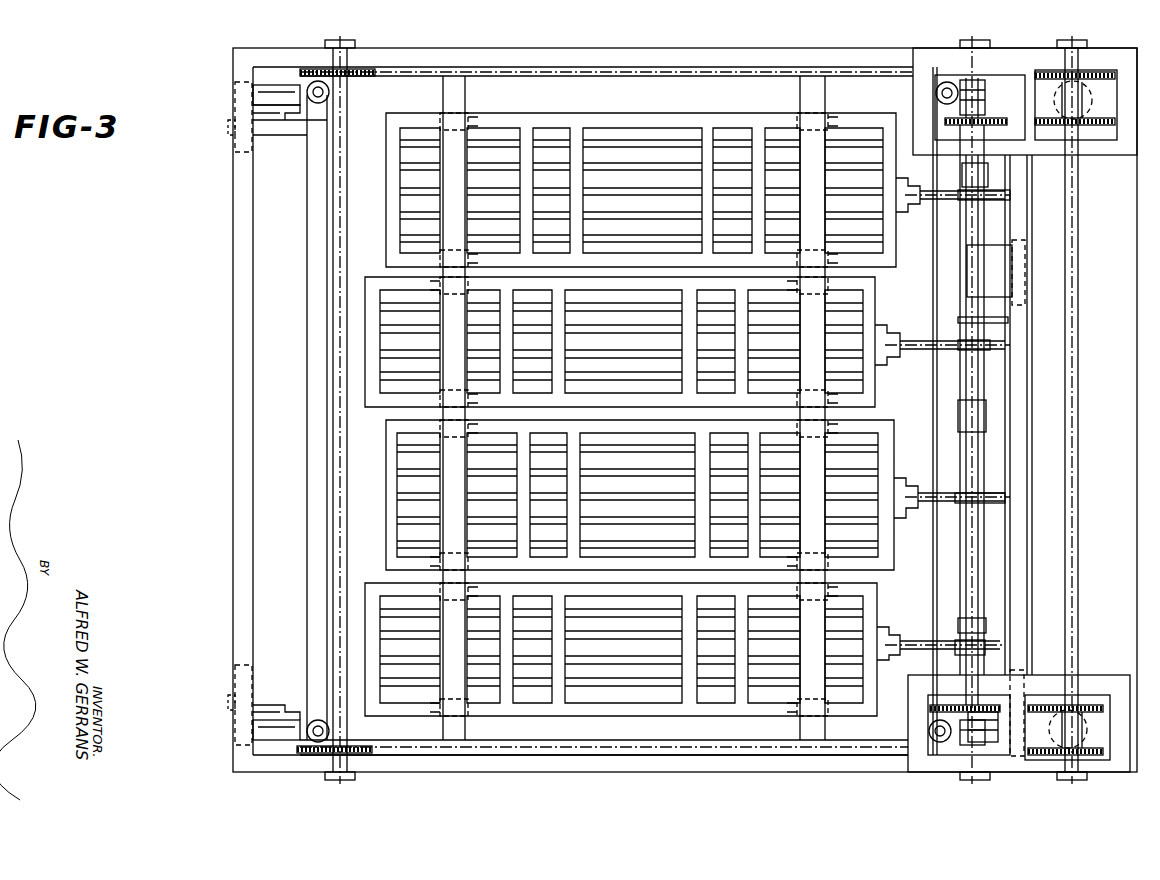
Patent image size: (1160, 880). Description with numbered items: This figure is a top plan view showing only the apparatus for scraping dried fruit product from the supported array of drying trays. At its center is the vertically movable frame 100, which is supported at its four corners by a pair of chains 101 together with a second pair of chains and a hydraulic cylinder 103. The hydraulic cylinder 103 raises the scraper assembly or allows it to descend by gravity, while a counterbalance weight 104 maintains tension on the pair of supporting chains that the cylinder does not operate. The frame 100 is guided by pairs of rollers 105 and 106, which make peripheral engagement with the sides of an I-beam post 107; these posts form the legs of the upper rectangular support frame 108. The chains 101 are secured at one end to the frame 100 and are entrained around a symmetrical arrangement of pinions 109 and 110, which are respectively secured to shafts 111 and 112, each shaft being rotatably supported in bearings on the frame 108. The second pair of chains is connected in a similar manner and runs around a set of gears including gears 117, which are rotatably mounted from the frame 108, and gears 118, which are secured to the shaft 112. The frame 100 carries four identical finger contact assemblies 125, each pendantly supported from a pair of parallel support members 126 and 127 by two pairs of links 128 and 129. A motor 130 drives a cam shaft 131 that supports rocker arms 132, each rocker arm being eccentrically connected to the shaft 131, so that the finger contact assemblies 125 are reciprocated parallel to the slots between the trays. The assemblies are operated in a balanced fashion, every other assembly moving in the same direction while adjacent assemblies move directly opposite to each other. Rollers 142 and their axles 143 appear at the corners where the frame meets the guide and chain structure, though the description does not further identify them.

The vertically movable frame 100 is at (306, 308).
The pair of chains 101 is at (570, 76).
The hydraulic cylinder 103 is at (1086, 742).
The counterbalance weight 104 is at (1066, 100).
The rollers 105 is at (275, 92).
The rollers 106 is at (243, 150).
The I-beam post 107 is at (244, 98).
The upper rectangular support frame 108 is at (250, 392).
The pinion 109 is at (368, 70).
The pinion 110 is at (1106, 73).
The shaft 111 is at (336, 223).
The shaft 112 is at (1079, 346).
The gear 117 is at (986, 128).
The gear 118 is at (1110, 126).
The finger contact assembly 125 is at (650, 115).
The support member 126 is at (446, 174).
The support member 127 is at (820, 226).
The links 128 is at (446, 398).
The links 129 is at (843, 119).
The motor 130 is at (1004, 278).
The cam shaft 131 is at (984, 438).
The rocker arm 132 is at (936, 192).
The roller 142 is at (318, 80).
The roller axle 143 is at (311, 724).